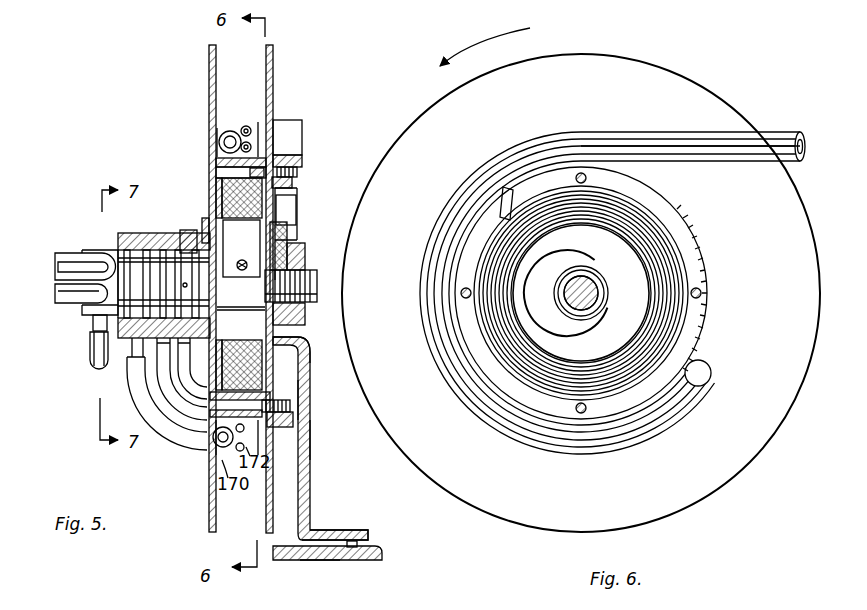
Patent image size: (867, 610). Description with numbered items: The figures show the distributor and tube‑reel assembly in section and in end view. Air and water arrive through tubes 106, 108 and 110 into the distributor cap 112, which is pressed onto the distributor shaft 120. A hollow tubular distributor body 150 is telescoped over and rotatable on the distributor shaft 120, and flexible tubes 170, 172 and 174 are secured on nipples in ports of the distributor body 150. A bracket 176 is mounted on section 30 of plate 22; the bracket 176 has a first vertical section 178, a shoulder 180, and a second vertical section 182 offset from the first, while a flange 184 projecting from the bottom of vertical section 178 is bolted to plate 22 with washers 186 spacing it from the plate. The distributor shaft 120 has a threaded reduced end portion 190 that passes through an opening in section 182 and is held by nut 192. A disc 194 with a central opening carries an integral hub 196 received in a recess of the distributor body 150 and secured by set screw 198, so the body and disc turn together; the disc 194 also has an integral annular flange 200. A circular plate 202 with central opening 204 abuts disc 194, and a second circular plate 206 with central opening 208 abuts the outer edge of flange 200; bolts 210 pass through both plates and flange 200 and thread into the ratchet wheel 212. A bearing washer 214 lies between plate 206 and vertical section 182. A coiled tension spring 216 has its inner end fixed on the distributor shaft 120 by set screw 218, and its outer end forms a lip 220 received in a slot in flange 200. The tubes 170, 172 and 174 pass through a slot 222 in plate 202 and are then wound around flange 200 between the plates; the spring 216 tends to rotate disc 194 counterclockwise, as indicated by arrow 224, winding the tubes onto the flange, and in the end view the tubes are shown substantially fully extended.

In FIG. 5, the plate 22 is at (362, 566).
In FIG. 5, the section of plate 30 is at (336, 562).
In FIG. 5, the tube 106 is at (63, 258).
In FIG. 5, the tube 108 is at (62, 301).
In FIG. 5, the tube 110 is at (92, 356).
In FIG. 5, the distributor cap 112 is at (92, 313).
In FIG. 5, the distributor shaft 120 is at (93, 250).
In FIG. 6, the distributor shaft 120 is at (556, 308).
In FIG. 5, the distributor body 150 is at (170, 236).
In FIG. 5, the flexible tube 170 is at (185, 415).
In FIG. 6, the flexible tube 170 is at (794, 133).
In FIG. 5, the flexible tube 172 is at (160, 415).
In FIG. 6, the flexible tube 172 is at (648, 130).
In FIG. 5, the flexible tube 174 is at (200, 445).
In FIG. 6, the flexible tube 174 is at (702, 160).
In FIG. 5, the bracket 176 is at (312, 472).
In FIG. 5, the first vertical section 178 is at (311, 438).
In FIG. 5, the shoulder 180 is at (302, 343).
In FIG. 5, the second vertical section 182 is at (288, 236).
In FIG. 5, the flange 184 is at (333, 532).
In FIG. 5, the washer 186 is at (358, 544).
In FIG. 5, the reduced end portion 190 is at (308, 272).
In FIG. 6, the reduced end portion 190 is at (598, 298).
In FIG. 5, the nut 192 is at (304, 318).
In FIG. 5, the disc 194 is at (216, 205).
In FIG. 6, the disc 194 is at (628, 254).
In FIG. 5, the hub 196 is at (209, 222).
In FIG. 5, the set screw 198 is at (242, 248).
In FIG. 5, the annular flange 200 is at (258, 158).
In FIG. 6, the annular flange 200 is at (703, 248).
In FIG. 5, the circular plate 202 is at (209, 77).
In FIG. 6, the circular plate 202 is at (598, 86).
In FIG. 5, the central opening 204 is at (211, 195).
In FIG. 5, the second circular plate 206 is at (273, 80).
In FIG. 5, the central opening 208 is at (311, 390).
In FIG. 5, the bolt 210 is at (302, 150).
In FIG. 6, the bolt 210 is at (586, 178).
In FIG. 5, the ratchet wheel 212 is at (300, 205).
In FIG. 5, the bearing washer 214 is at (272, 235).
In FIG. 6, the coiled tension spring 216 is at (552, 372).
In FIG. 6, the set screw 218 is at (560, 268).
In FIG. 6, the lip 220 is at (502, 195).
In FIG. 6, the slot 222 is at (712, 383).
In FIG. 6, the arrow 224 is at (455, 50).